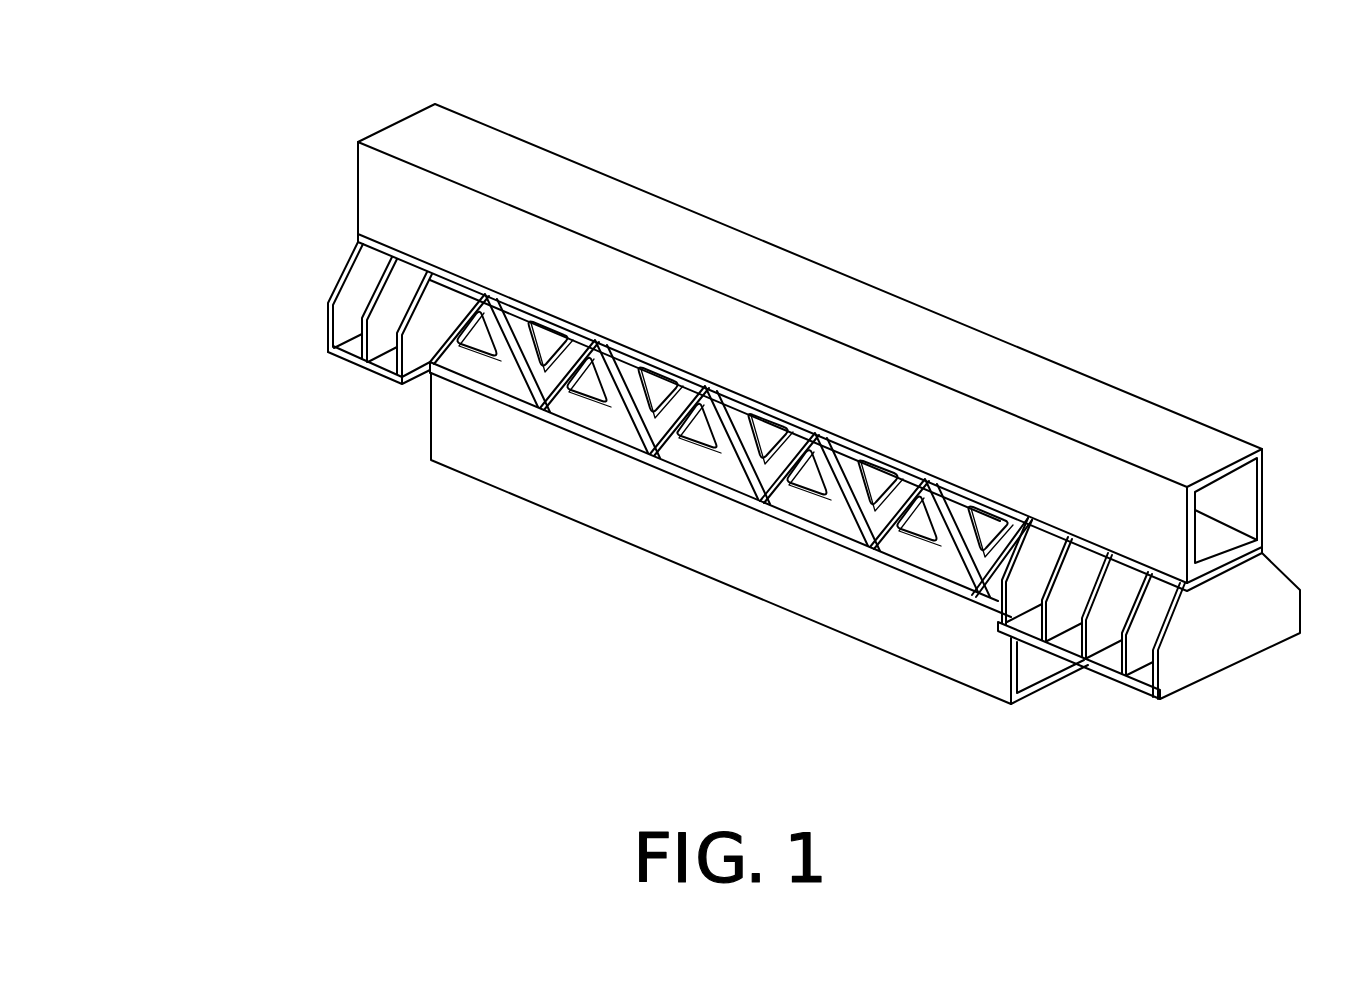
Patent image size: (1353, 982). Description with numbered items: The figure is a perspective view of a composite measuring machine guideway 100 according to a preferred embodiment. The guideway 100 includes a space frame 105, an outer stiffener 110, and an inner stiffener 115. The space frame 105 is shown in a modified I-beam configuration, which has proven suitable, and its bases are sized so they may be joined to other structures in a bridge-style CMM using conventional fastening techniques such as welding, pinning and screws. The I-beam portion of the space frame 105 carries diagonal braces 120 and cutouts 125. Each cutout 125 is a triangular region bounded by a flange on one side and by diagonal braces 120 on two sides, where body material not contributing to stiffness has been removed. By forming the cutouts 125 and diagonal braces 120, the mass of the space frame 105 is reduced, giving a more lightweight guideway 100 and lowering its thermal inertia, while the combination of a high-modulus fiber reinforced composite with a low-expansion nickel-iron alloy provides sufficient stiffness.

The CMM guideway 100 is at (1010, 75).
The space frame 105 is at (343, 273).
The outer stiffener 110 is at (425, 134).
The inner stiffener 115 is at (432, 397).
The diagonal braces 120 is at (843, 473).
The cutouts 125 is at (913, 517).